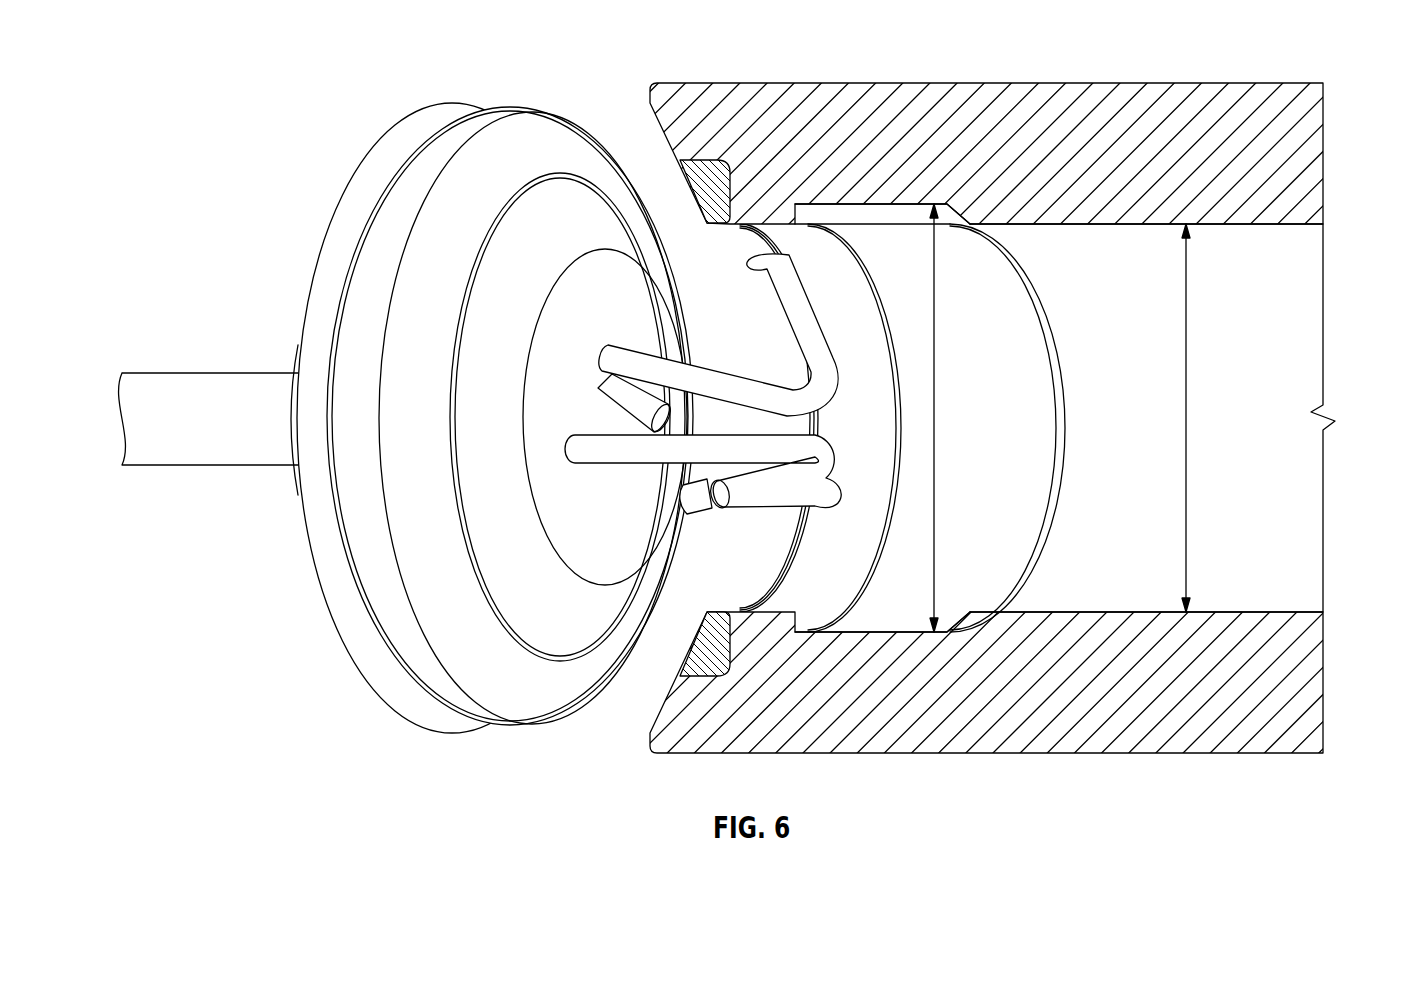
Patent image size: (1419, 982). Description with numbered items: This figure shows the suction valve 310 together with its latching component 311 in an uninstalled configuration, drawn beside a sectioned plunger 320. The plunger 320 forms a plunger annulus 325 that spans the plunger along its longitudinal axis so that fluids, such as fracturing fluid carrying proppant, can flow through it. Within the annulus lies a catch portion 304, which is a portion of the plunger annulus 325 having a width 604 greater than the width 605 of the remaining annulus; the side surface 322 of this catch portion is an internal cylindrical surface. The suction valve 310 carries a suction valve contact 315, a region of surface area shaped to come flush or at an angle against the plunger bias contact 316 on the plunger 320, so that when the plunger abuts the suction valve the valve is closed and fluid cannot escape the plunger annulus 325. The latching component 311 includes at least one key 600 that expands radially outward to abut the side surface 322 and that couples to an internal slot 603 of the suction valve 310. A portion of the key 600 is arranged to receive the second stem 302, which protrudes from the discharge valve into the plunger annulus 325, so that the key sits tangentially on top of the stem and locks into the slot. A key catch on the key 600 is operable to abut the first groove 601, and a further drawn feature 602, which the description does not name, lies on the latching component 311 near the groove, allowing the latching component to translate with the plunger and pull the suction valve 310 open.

The second stem 302 is at (197, 373).
The catch portion 304 is at (913, 197).
The suction valve 310 is at (545, 385).
The latching component 311 is at (632, 508).
The suction valve contact 315 is at (573, 138).
The plunger bias contact 316 is at (737, 157).
The plunger 320 is at (1243, 83).
The side surface 322 is at (883, 633).
The plunger annulus 325 is at (1290, 287).
The key 600 is at (820, 320).
The first groove 601 is at (800, 633).
The cup flange 602 is at (1027, 572).
The internal slot 603 is at (572, 468).
The width of catch portion 604 is at (934, 420).
The width of remaining plunger annulus 605 is at (1186, 402).